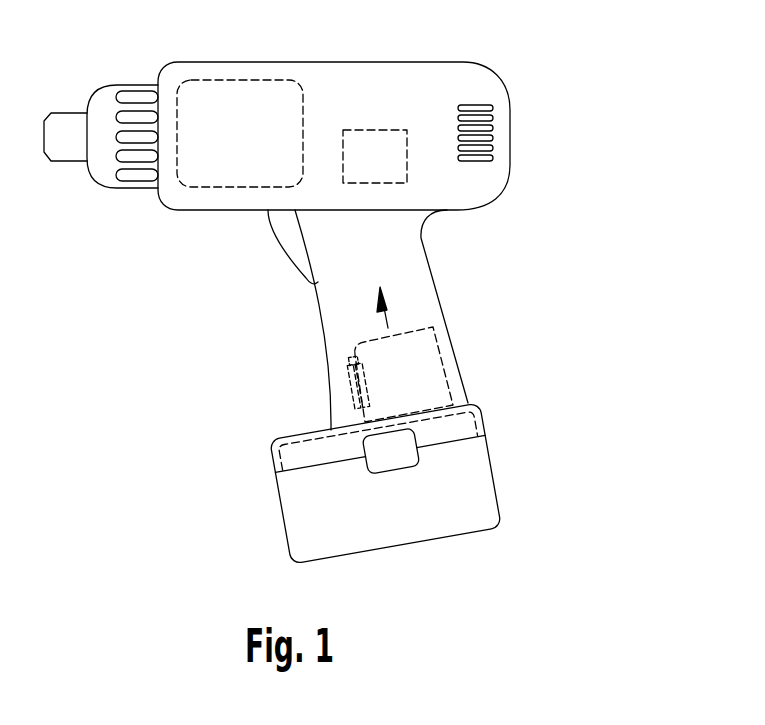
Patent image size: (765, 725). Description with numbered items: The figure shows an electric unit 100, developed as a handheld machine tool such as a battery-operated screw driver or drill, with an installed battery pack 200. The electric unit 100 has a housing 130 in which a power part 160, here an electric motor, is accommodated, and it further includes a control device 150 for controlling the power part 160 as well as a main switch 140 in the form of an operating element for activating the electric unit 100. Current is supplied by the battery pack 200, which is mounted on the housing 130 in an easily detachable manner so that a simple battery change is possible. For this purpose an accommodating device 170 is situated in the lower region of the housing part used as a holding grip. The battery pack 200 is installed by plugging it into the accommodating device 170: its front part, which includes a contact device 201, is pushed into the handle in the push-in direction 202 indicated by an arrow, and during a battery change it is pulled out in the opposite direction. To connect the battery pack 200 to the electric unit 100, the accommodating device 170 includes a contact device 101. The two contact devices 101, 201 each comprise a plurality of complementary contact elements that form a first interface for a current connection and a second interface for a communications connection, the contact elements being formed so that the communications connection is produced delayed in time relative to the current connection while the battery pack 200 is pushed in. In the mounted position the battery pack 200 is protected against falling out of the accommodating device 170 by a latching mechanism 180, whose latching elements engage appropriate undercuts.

The electric unit 100 is at (471, 239).
The contact device 101 is at (348, 362).
The housing 130 is at (496, 86).
The main switch 140 is at (288, 235).
The control device 150 is at (374, 138).
The power part 160 is at (186, 83).
The accommodating device 170 is at (482, 402).
The latching mechanism 180 is at (410, 455).
The battery pack 200 is at (495, 508).
The contact device 201 is at (360, 407).
The push-in direction 202 is at (387, 318).